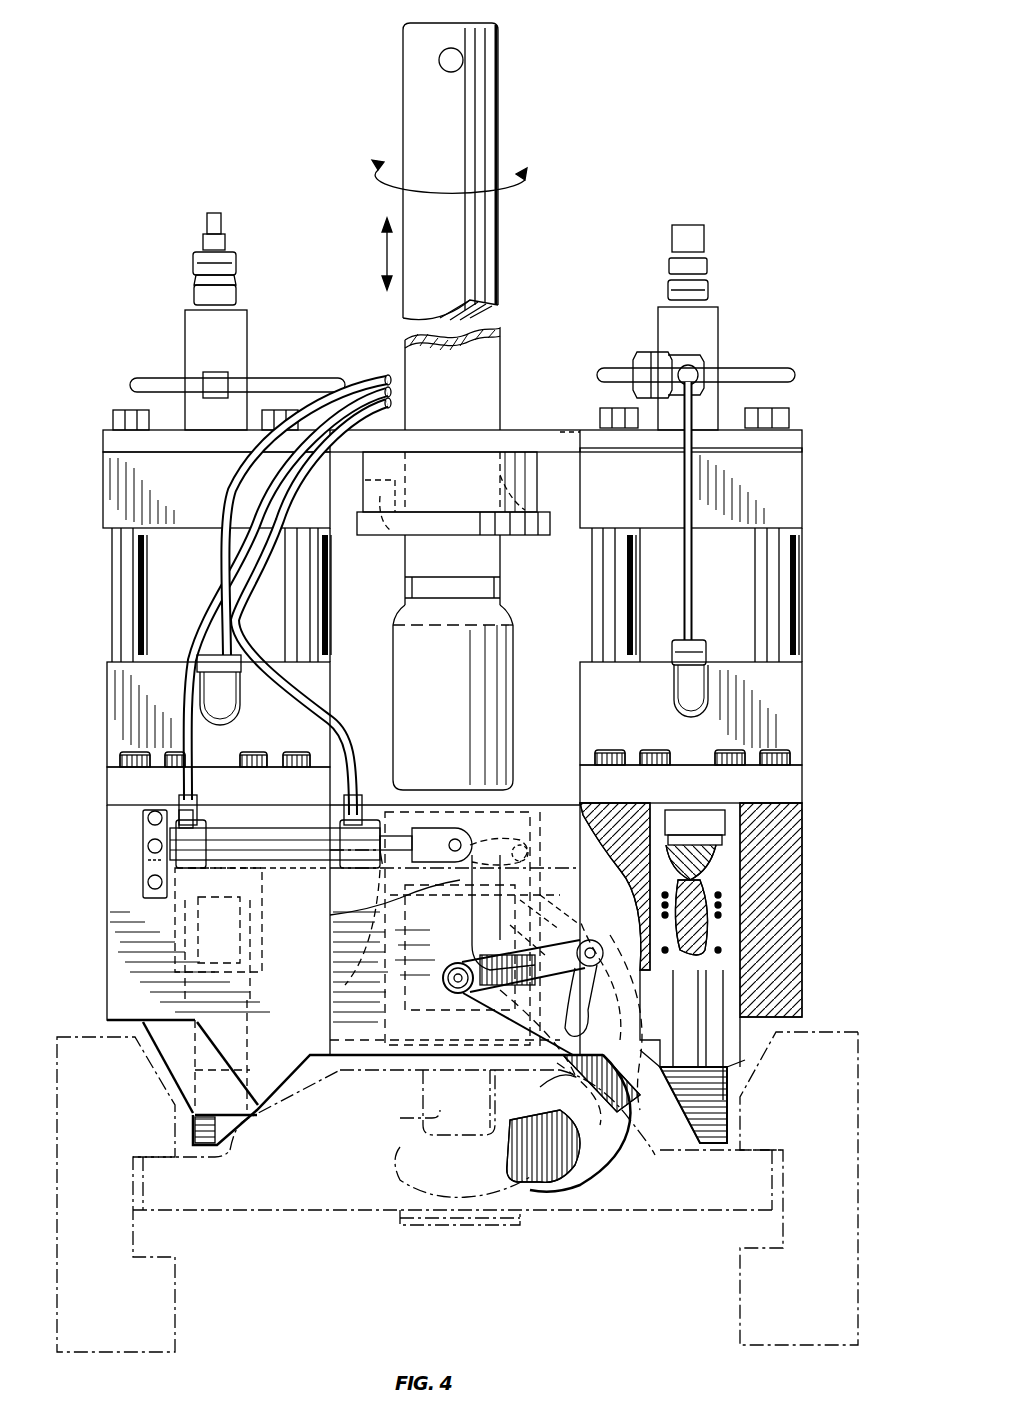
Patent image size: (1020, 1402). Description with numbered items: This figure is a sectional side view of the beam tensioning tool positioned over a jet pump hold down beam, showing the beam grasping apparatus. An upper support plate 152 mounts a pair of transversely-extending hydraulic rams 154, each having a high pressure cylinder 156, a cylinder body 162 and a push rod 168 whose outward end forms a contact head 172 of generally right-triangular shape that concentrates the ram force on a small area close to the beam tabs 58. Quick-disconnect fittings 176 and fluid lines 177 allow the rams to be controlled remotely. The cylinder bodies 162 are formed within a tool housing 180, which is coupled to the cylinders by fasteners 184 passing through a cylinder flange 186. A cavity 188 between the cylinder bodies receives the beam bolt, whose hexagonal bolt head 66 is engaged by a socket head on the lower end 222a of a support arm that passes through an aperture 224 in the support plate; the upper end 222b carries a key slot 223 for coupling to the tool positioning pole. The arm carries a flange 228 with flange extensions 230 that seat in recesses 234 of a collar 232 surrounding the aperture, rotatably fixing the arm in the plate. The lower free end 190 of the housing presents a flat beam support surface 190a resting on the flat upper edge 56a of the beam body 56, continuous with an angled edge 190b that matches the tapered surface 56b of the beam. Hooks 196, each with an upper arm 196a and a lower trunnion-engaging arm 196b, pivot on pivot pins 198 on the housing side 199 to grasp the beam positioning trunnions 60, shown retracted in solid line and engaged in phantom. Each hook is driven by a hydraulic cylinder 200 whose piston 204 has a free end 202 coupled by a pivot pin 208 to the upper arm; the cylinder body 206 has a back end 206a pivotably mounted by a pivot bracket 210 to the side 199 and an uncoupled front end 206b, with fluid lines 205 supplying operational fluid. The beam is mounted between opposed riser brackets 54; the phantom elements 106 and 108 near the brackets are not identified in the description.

The upper end of support arm 222b is at (490, 40).
The key slot 223 is at (438, 60).
The lower end of support arm 222a is at (403, 575).
The free end of cylinder piston 202 is at (445, 795).
The upper support plate 152 is at (105, 440).
The fluid lines 177 is at (238, 490).
The quick-disconnect fittings 176 is at (218, 220).
The fluid lines 205 is at (232, 585).
The front end of cylinder body 206b is at (372, 760).
The cylinder body 206 is at (255, 820).
The side of tool housing 199 is at (118, 980).
The hydraulic cylinder 200 is at (308, 825).
The back end of cylinder body 206a is at (165, 826).
The pivot bracket 210 is at (140, 850).
The cylinder piston 204 is at (412, 832).
The pivot pin 208 is at (475, 845).
The tool housing 180 is at (568, 790).
The cavity 188 is at (540, 805).
The bolt head 66 is at (398, 897).
The upper arm of hook 196a is at (345, 918).
The pivot pin 198 is at (456, 994).
The hooks 196 is at (565, 940).
The lower trunnion-engaging arm 196b is at (615, 1135).
The high pressure cylinder 156 is at (790, 483).
The rams 154 is at (845, 553).
The fasteners 184 is at (790, 748).
The cylinder flange 186 is at (795, 780).
The cylinder body 162 is at (795, 838).
The push rod 168 is at (700, 1012).
The contact head 172 is at (725, 1095).
The collar 232 is at (464, 481).
The recesses 234 is at (384, 535).
The flange 228 is at (522, 532).
The flange extensions 230 is at (545, 512).
The aperture 224 is at (530, 430).
The lower free end of tool housing 190 is at (350, 1000).
The beam support surface 190a is at (335, 1040).
The angled edge 190b is at (300, 1048).
The tapered surface 56b is at (296, 1092).
The upper edge of beam body 56a is at (340, 1078).
The beam positioning trunnions 60 is at (410, 1118).
The beam body 56 is at (600, 1220).
The base plate 106 is at (135, 1228).
The support 108 is at (134, 1155).
The beam tabs 58 is at (733, 1212).
The riser brackets 54 is at (811, 1298).